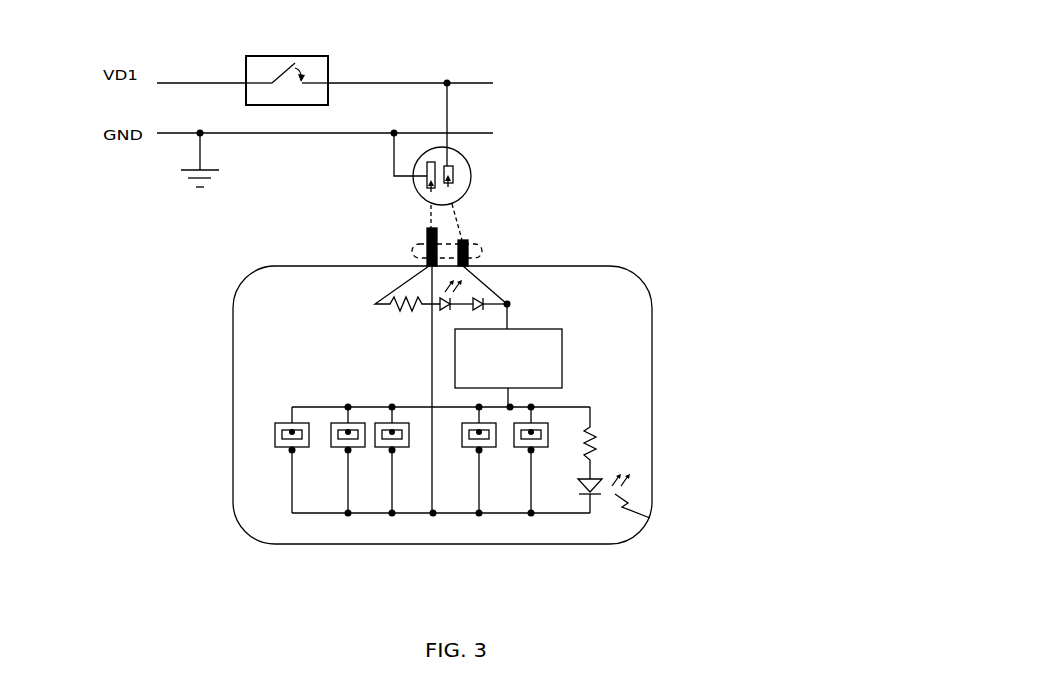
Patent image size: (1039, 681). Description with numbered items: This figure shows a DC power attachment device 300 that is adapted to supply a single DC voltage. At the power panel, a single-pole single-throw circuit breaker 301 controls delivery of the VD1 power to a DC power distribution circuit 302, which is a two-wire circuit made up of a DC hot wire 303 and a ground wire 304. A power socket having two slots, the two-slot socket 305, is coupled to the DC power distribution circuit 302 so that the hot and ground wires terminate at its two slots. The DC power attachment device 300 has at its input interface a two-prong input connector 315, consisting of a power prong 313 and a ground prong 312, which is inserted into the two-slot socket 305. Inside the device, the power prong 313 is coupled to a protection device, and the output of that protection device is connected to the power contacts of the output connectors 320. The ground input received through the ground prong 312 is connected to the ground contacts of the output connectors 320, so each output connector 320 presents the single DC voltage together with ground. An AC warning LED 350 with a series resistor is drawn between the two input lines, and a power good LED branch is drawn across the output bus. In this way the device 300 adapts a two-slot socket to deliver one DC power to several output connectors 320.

The DC power attachment device 300 is at (501, 389).
The SPST circuit breaker 301 is at (274, 29).
The DC power distribution circuit 302 is at (480, 120).
The DC hot wire 303 is at (350, 83).
The ground wire 304 is at (350, 128).
The 2-slot socket 305 is at (471, 173).
The ground prong 312 is at (423, 229).
The power prong 313 is at (534, 235).
The 2-prong input connector 315 is at (389, 226).
The output connectors 320 is at (277, 432).
The AC warning LED 350 is at (423, 319).